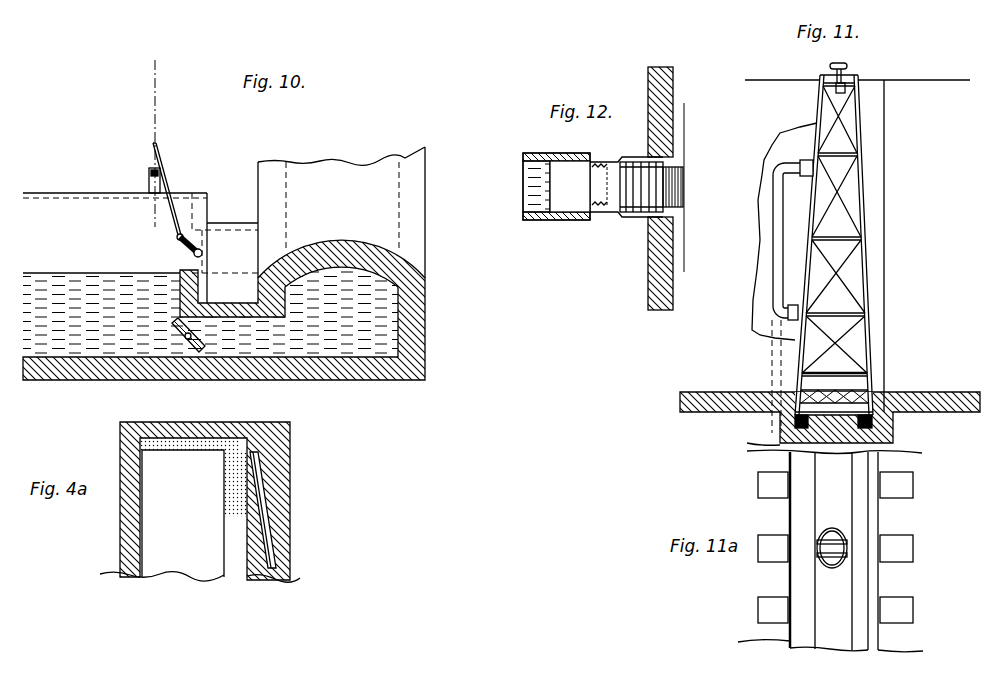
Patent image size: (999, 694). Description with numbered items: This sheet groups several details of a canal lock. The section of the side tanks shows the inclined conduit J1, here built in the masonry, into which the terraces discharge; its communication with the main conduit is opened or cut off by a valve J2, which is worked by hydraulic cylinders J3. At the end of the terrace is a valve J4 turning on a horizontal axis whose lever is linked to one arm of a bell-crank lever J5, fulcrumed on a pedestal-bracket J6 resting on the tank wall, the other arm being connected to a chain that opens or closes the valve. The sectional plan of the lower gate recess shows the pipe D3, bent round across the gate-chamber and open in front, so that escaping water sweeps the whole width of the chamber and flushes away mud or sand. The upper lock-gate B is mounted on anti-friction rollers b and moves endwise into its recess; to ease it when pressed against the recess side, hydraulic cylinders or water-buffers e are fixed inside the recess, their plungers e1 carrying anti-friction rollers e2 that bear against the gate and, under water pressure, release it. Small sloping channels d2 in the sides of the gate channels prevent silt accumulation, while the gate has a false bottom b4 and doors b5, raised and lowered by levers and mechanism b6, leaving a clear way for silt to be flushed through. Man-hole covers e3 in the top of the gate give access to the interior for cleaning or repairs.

In FIG. 10, the inclined conduit J1 is at (170, 246).
In FIG. 10, the valve J2 is at (195, 256).
In FIG. 10, the hydraulic cylinders J3 is at (101, 315).
In FIG. 10, the valve J4 is at (204, 341).
In FIG. 10, the bell-crank lever J5 is at (160, 150).
In FIG. 10, the pedestal-bracket J6 is at (149, 181).
In FIG. 4a, the upper lock-gate B is at (183, 513).
In FIG. 12, the upper lock-gate B is at (686, 147).
In FIG. 11, the upper lock-gate B is at (834, 245).
In FIG. 4a, the pipe D3 is at (268, 512).
In FIG. 12, the hydraulic cylinders or water-buffers e is at (531, 221).
In FIG. 11, the hydraulic cylinders or water-buffers e is at (777, 290).
In FIG. 12, the plungers e1 is at (606, 187).
In FIG. 12, the anti-friction rollers e2 is at (684, 191).
In FIG. 11, the anti-friction rollers e2 is at (806, 177).
In FIG. 11a, the man-hole covers e3 is at (832, 531).
In FIG. 11, the anti-friction rollers b is at (835, 431).
In FIG. 11, the false bottom b4 is at (840, 390).
In FIG. 11, the doors b5 is at (845, 424).
In FIG. 11, the levers and mechanism b6 is at (845, 82).
In FIG. 11, the small sloping channels d2 is at (767, 393).
In FIG. 11a, the small sloping channels d2 is at (835, 547).